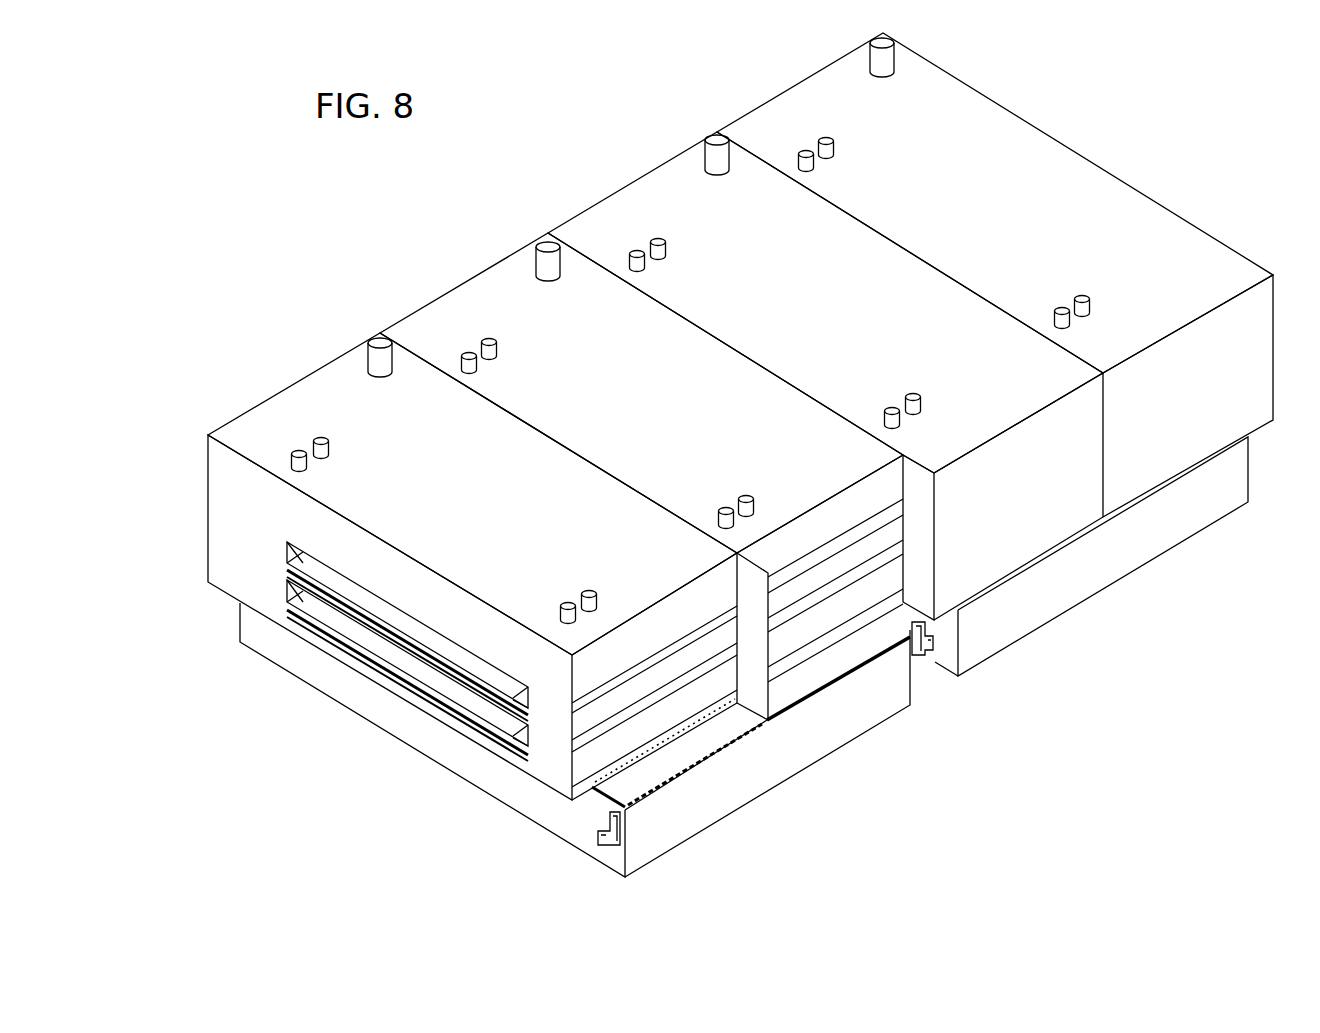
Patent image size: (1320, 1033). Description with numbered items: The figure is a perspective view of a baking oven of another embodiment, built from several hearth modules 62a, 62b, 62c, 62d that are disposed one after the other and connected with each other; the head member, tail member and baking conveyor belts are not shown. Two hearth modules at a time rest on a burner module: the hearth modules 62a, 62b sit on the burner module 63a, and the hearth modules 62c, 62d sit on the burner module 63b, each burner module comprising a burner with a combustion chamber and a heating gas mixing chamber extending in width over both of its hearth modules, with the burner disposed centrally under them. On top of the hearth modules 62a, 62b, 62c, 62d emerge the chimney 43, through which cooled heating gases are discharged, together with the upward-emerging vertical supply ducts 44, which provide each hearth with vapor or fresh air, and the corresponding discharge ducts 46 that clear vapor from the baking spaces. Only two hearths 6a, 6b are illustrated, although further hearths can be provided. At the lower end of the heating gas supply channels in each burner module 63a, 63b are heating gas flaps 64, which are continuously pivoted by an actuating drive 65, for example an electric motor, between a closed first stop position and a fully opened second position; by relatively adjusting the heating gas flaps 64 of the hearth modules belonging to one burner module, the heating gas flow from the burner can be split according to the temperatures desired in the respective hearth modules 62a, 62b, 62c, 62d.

The hearth module 62a is at (360, 390).
The hearth module 62b is at (522, 292).
The hearth module 62c is at (690, 190).
The hearth module 62d is at (813, 107).
The chimney 43 is at (380, 338).
The vertical supply duct 44 is at (588, 589).
The discharge duct 46 is at (319, 436).
The hearth 6a is at (430, 675).
The hearth 6b is at (410, 625).
The burner module 63a is at (596, 743).
The burner module 63b is at (1043, 595).
The heating gas flap 64 is at (817, 670).
The actuating drive 65 is at (922, 652).